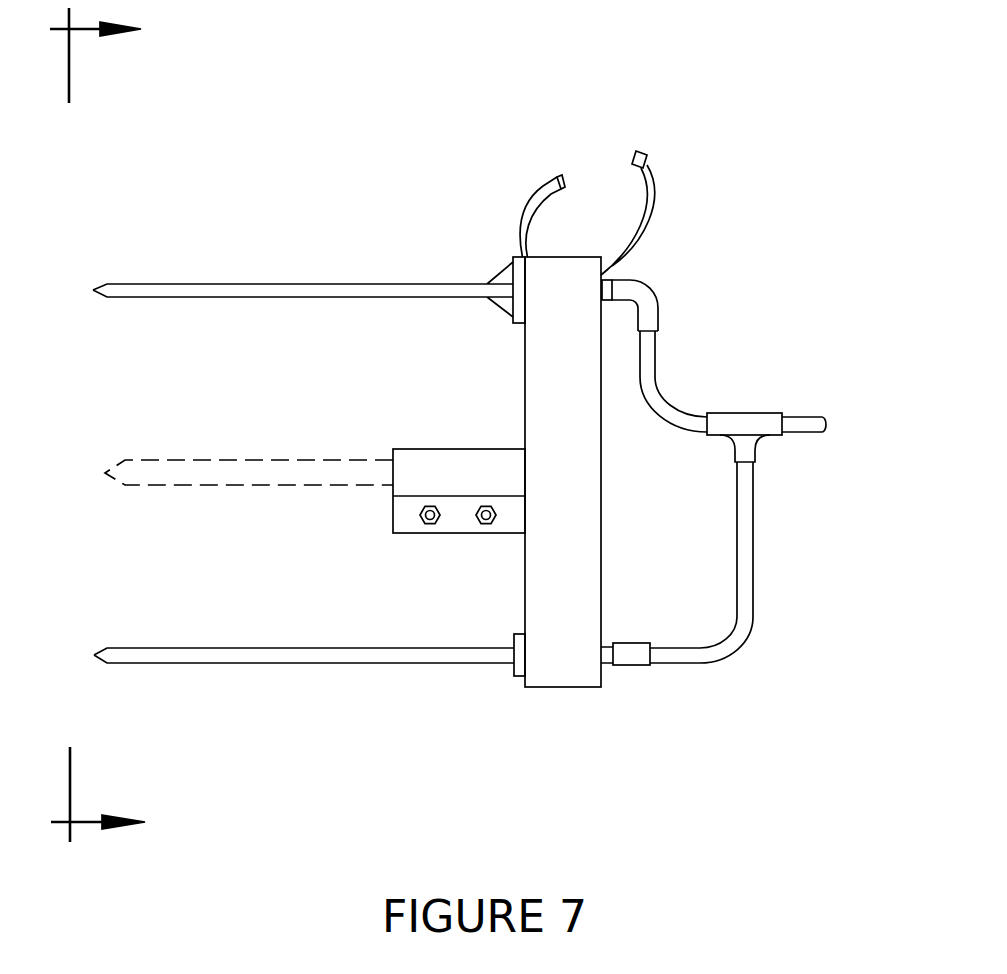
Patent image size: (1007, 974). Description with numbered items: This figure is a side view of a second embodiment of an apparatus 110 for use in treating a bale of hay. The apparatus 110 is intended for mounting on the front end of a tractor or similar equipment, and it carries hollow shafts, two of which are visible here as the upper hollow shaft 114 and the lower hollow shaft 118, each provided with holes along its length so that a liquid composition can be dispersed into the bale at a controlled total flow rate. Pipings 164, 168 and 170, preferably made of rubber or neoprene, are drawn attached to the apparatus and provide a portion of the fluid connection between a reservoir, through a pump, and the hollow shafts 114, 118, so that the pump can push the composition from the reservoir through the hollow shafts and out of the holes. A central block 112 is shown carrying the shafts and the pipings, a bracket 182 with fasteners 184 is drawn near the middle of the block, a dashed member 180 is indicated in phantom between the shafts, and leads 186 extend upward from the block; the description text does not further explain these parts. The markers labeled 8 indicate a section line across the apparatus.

The section line 8- 8 is at (114, 427).
The apparatus 110 is at (761, 39).
The manifold block 112 is at (573, 673).
The hollow shaft 114 is at (272, 293).
The hollow shaft 118 is at (208, 657).
The piping 164 is at (805, 424).
The piping 168 is at (743, 578).
The piping 170 is at (655, 389).
The hidden tine 180 is at (235, 472).
The mounting bracket 182 is at (457, 461).
The bolt 184 is at (425, 526).
The wire lead 186 is at (533, 193).